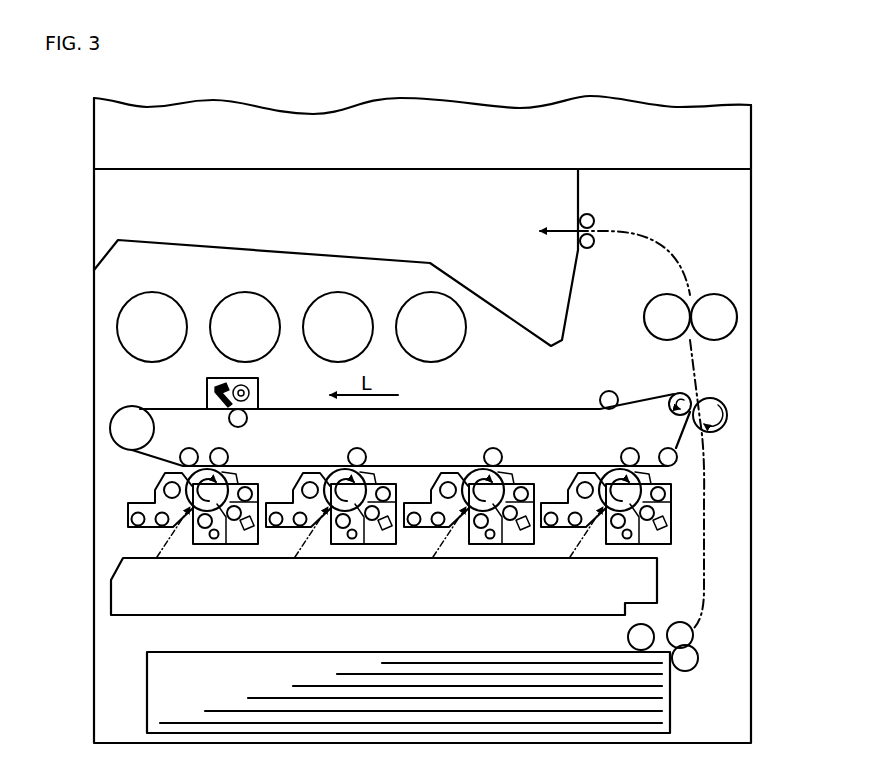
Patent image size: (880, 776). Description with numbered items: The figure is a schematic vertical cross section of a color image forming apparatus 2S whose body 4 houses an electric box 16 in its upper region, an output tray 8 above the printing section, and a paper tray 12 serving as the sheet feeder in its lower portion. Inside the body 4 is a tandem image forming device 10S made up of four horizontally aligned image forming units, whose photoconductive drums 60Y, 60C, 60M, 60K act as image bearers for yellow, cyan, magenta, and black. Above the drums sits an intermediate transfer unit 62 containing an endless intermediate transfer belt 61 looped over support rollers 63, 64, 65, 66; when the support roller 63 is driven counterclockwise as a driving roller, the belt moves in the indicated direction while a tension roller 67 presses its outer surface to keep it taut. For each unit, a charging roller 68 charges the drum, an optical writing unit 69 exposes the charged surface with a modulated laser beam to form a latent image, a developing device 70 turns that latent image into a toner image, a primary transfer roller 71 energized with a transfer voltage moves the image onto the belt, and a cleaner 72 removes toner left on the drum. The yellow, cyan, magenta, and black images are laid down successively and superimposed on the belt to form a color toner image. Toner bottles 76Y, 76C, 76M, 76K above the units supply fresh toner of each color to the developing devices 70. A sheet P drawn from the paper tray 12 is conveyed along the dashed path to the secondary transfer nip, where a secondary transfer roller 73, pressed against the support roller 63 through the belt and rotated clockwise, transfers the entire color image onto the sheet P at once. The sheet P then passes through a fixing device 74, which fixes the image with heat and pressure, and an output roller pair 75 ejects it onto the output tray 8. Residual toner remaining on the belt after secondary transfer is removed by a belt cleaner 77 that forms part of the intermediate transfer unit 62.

The image forming apparatus 2S is at (640, 77).
The body 4 is at (752, 491).
The output tray 8 is at (474, 292).
The tandem image forming device 10S is at (113, 462).
The paper tray 12 is at (433, 677).
The electric box 16 is at (745, 132).
The photoconductive drum 60Y is at (218, 474).
The photoconductive drum 60C is at (356, 474).
The photoconductive drum 60M is at (494, 474).
The photoconductive drum 60K is at (612, 472).
The intermediate transfer belt 61 is at (456, 409).
The intermediate transfer unit 62 is at (411, 407).
The support roller 63 is at (673, 396).
The support roller 64 is at (131, 407).
The support roller 65 is at (184, 449).
The support roller 66 is at (677, 460).
The tension roller 67 is at (603, 392).
The charging roller 68 is at (203, 540).
The optical writing unit 69 is at (660, 586).
The developing device 70 is at (142, 501).
The primary transfer roller 71 is at (215, 449).
The cleaner 72 is at (262, 487).
The secondary transfer roller 73 is at (713, 399).
The fixing device 74 is at (712, 294).
The output roller pair 75 is at (597, 242).
The toner bottle 76Y is at (142, 292).
The toner bottle 76C is at (225, 292).
The toner bottle 76M is at (318, 292).
The toner bottle 76K is at (410, 292).
The belt cleaner 77 is at (262, 394).
The sheet P is at (518, 672).